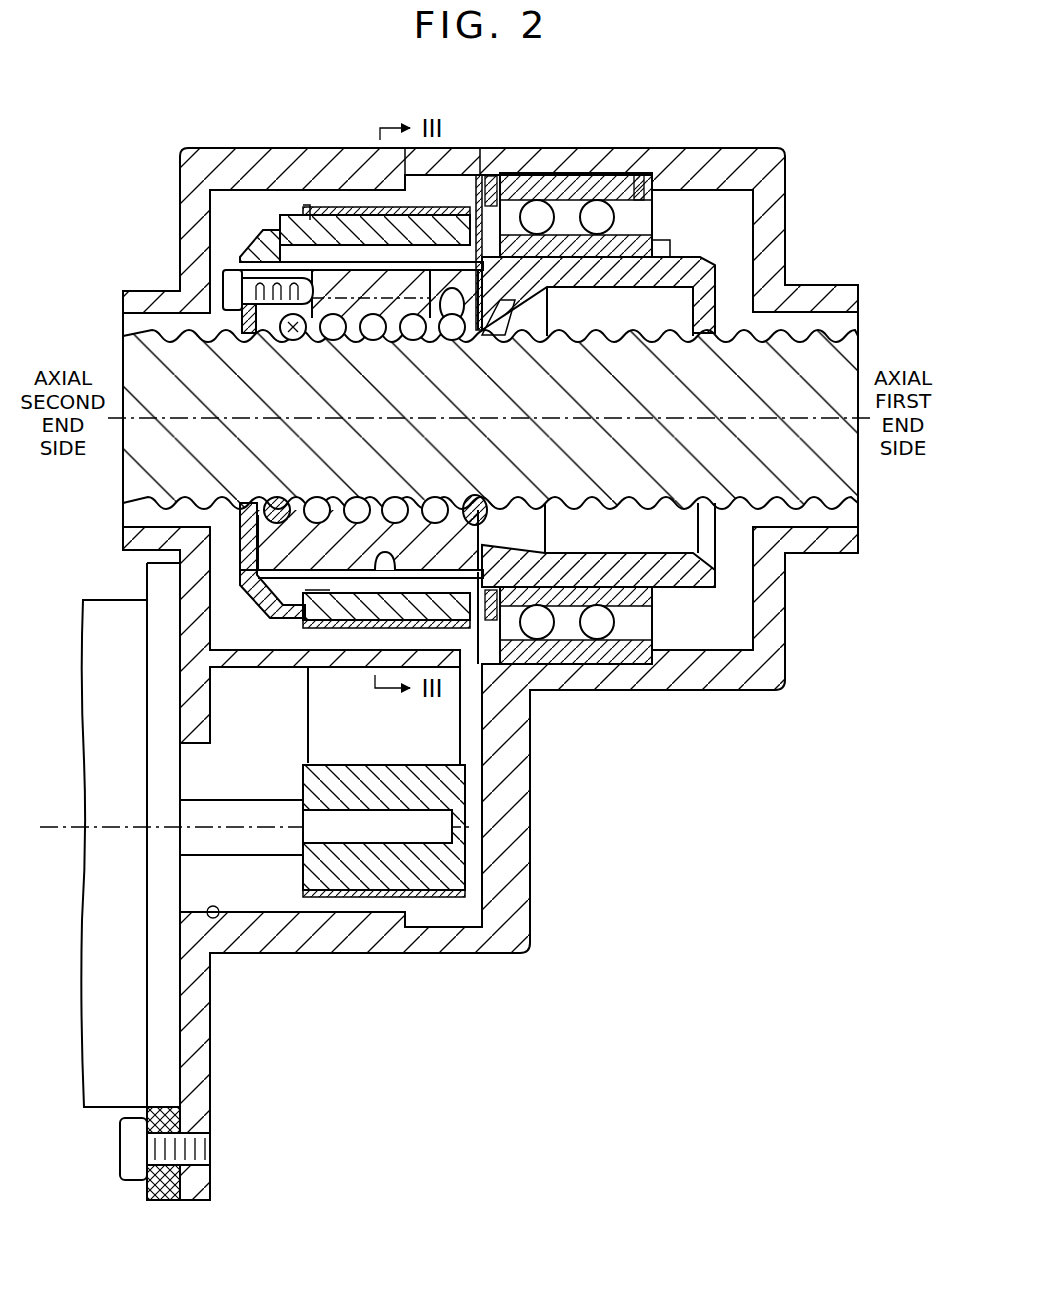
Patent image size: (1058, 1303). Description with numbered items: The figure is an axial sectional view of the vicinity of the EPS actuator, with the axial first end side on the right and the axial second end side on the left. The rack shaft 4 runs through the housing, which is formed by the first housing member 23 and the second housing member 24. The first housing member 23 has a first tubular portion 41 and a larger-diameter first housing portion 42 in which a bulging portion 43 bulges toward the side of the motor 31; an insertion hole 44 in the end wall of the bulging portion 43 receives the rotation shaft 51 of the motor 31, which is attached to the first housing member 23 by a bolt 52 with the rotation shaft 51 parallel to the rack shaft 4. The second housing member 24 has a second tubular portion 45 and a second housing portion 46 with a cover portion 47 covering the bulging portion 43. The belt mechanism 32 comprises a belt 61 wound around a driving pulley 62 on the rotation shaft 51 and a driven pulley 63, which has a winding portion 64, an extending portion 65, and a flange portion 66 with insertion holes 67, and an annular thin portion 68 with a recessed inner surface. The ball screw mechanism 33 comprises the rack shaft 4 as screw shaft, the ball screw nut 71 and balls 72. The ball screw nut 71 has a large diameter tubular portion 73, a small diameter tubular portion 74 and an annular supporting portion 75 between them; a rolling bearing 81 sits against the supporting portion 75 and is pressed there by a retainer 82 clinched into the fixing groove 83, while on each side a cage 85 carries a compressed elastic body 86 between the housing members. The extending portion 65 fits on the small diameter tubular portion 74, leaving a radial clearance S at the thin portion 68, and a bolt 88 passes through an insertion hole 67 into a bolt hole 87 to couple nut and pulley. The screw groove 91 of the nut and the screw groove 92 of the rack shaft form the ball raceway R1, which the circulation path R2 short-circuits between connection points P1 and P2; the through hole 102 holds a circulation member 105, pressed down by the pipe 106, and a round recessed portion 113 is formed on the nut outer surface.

The rack shaft 4 is at (123, 495).
The first housing member 23 is at (154, 326).
The second housing member 24 is at (846, 330).
The motor 31 is at (82, 638).
The belt mechanism 32 is at (735, 590).
The ball screw mechanism 33 is at (463, 905).
The first tubular portion 41 is at (123, 301).
The first housing portion 42 is at (240, 150).
The bulging portion 43 is at (292, 955).
The insertion hole 44 is at (213, 918).
The second tubular portion 45 is at (833, 285).
The second housing portion 46 is at (752, 150).
The cover portion 47 is at (530, 770).
The rotation shaft 51 is at (262, 800).
The bolt 52 is at (120, 1150).
The belt 61 is at (447, 724).
The driving pulley 62 is at (368, 898).
The driven pulley 63 is at (280, 230).
The winding portion 64 is at (345, 207).
The extending portion 65 is at (262, 240).
The flange portion 66 is at (240, 548).
The insertion hole 67 is at (245, 325).
The thin portion 68 is at (360, 590).
The ball screw nut 71 is at (700, 258).
The ball 72 is at (345, 497).
The large diameter tubular portion 73 is at (640, 560).
The small diameter tubular portion 74 is at (262, 562).
The supporting portion 75 is at (478, 200).
The rolling bearing 81 is at (552, 173).
The retainer 82 is at (658, 225).
The fixing groove 83 is at (620, 311).
The cage 85 is at (648, 185).
The elastic body 86 is at (639, 178).
The bolt hole 87 is at (262, 306).
The bolt 88 is at (232, 272).
The screw groove 91 is at (472, 496).
The screw groove 92 is at (622, 508).
The through hole 102 is at (520, 300).
The circulation member 105 is at (490, 338).
The pipe 106 is at (300, 580).
The recessed portion 113 is at (388, 552).
The connection point P1 is at (293, 341).
The connection point P2 is at (452, 341).
The ball raceway R1 is at (376, 341).
The circulation path R2 is at (333, 341).
The radial clearance S is at (300, 592).